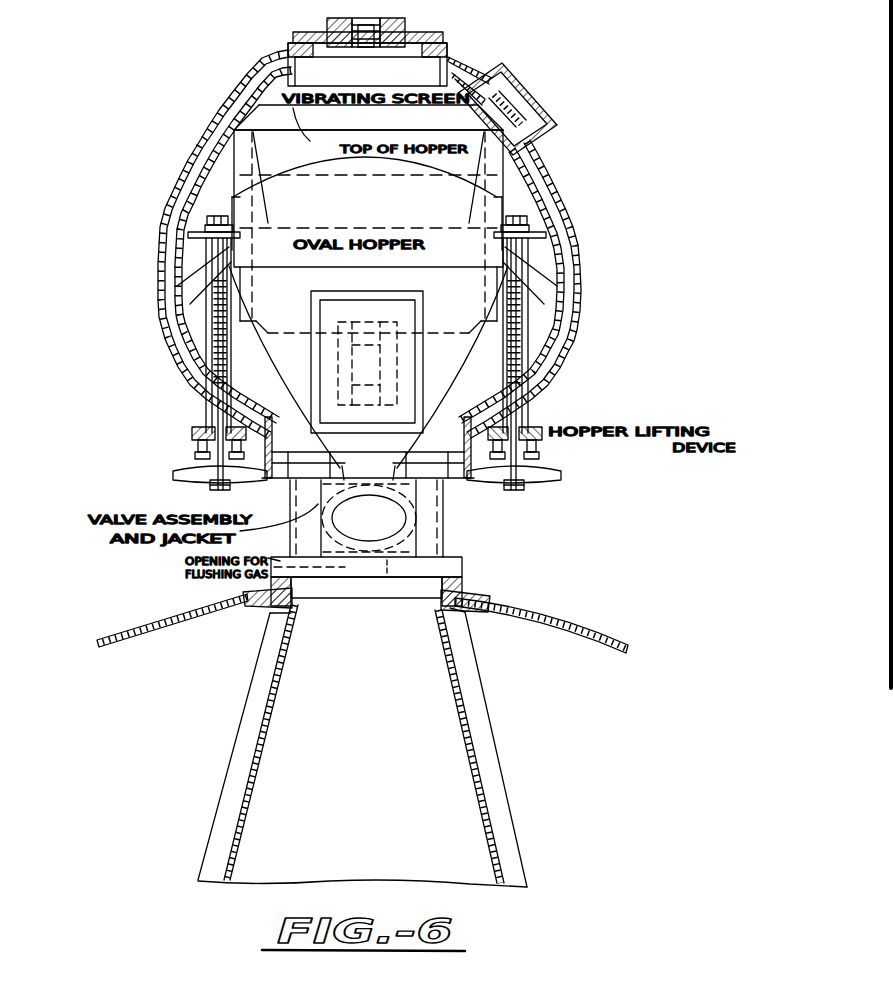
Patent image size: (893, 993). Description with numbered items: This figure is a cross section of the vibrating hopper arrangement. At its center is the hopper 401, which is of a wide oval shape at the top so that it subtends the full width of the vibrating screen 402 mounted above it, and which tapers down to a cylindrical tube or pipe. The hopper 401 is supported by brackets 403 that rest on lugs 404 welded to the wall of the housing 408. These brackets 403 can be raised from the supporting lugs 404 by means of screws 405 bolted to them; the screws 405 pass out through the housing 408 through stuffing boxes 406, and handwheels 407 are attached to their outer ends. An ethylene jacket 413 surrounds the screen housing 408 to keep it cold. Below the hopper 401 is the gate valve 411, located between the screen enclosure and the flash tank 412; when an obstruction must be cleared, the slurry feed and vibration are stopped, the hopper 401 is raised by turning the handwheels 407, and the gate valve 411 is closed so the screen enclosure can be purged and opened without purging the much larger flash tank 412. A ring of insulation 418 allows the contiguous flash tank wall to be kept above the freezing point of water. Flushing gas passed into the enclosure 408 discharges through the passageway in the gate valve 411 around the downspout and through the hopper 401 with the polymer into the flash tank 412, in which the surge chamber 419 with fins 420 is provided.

The hopper 401 is at (447, 358).
The vibrating screen 402 is at (430, 135).
The brackets 403 is at (208, 217).
The lugs 404 is at (190, 238).
The screws 405 is at (210, 303).
The stuffing boxes 406 is at (216, 414).
The handwheels 407 is at (183, 472).
The housing 408 is at (538, 166).
The gate valve 411 is at (418, 535).
The flash tank 412 is at (199, 608).
The ethylene jacket 413 is at (226, 93).
The ring of insulation 418 is at (465, 578).
The surge chamber 419 is at (490, 873).
The fins 420 is at (237, 739).